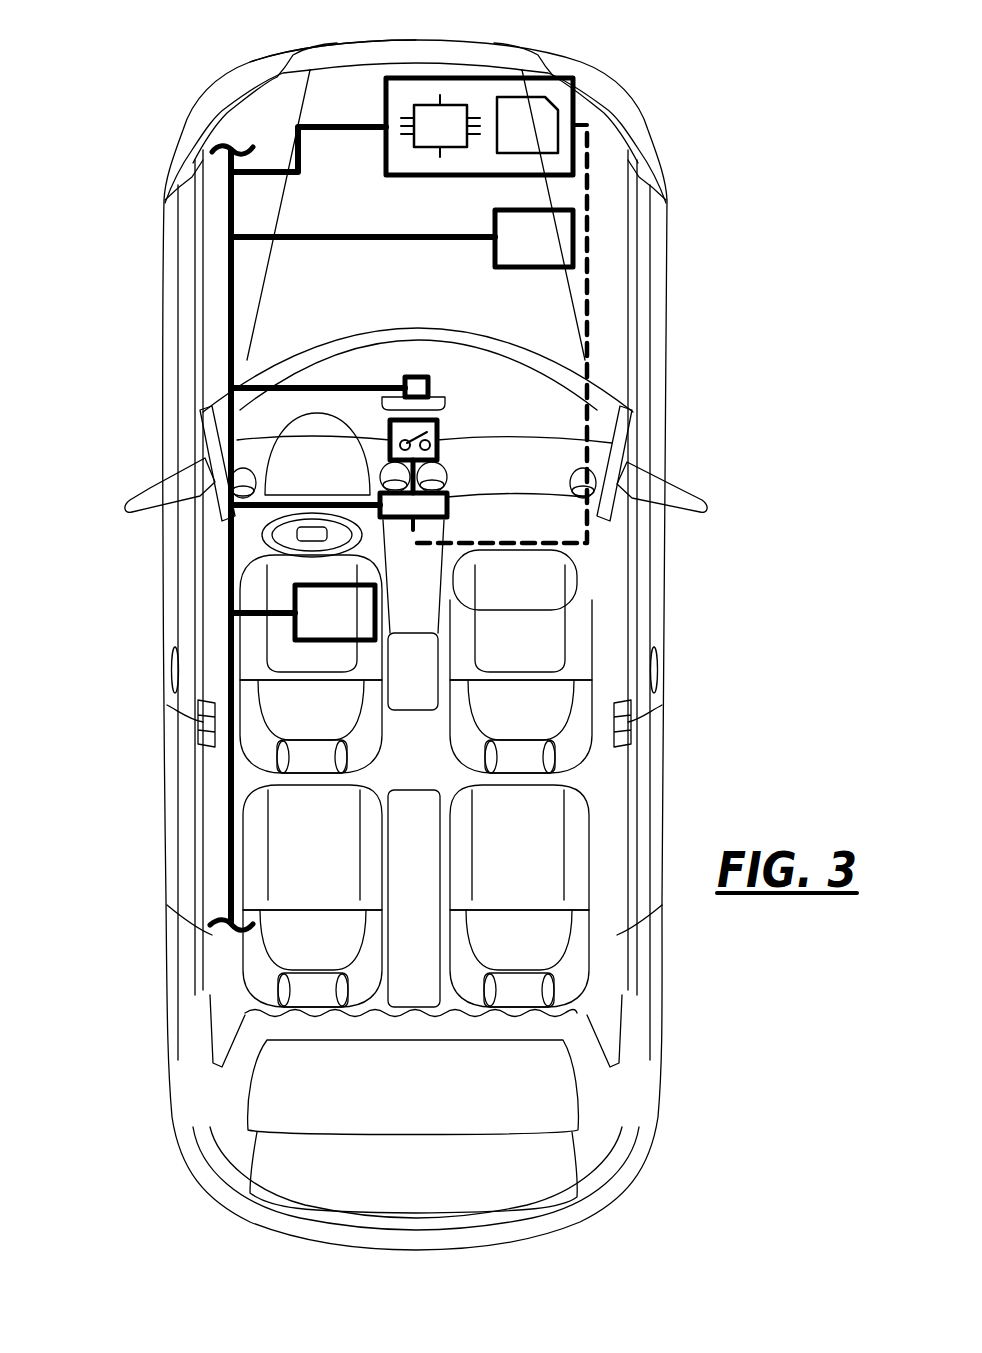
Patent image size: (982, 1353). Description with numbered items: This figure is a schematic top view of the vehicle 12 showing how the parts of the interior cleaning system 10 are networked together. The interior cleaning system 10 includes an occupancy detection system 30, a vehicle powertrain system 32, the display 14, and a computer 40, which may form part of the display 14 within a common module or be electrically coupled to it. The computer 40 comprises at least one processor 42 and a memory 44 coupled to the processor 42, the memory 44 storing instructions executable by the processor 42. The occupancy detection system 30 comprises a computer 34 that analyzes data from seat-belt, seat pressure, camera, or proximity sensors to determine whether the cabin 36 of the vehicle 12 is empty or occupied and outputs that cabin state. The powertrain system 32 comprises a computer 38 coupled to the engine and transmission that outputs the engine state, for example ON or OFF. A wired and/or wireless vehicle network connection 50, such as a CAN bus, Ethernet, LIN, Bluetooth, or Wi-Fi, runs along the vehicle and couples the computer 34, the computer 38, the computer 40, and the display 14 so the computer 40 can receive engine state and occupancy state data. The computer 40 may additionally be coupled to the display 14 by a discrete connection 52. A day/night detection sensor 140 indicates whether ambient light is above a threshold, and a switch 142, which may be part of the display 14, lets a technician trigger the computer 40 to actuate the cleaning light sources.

The interior cleaning system 10 is at (106, 334).
The vehicle 12 is at (528, 45).
The display 14 is at (448, 506).
The occupancy detection system 30 is at (482, 256).
The vehicle powertrain system 32 is at (333, 647).
The computer 34 is at (541, 254).
The cabin 36 is at (566, 631).
The computer 38 is at (342, 626).
The computer 40 is at (576, 106).
The processor 42 is at (447, 142).
The memory 44 is at (534, 141).
The vehicle network connection 50 is at (229, 227).
The discrete connection 52 is at (590, 286).
The day/night detection sensor 140 is at (432, 386).
The switch 142 is at (440, 438).